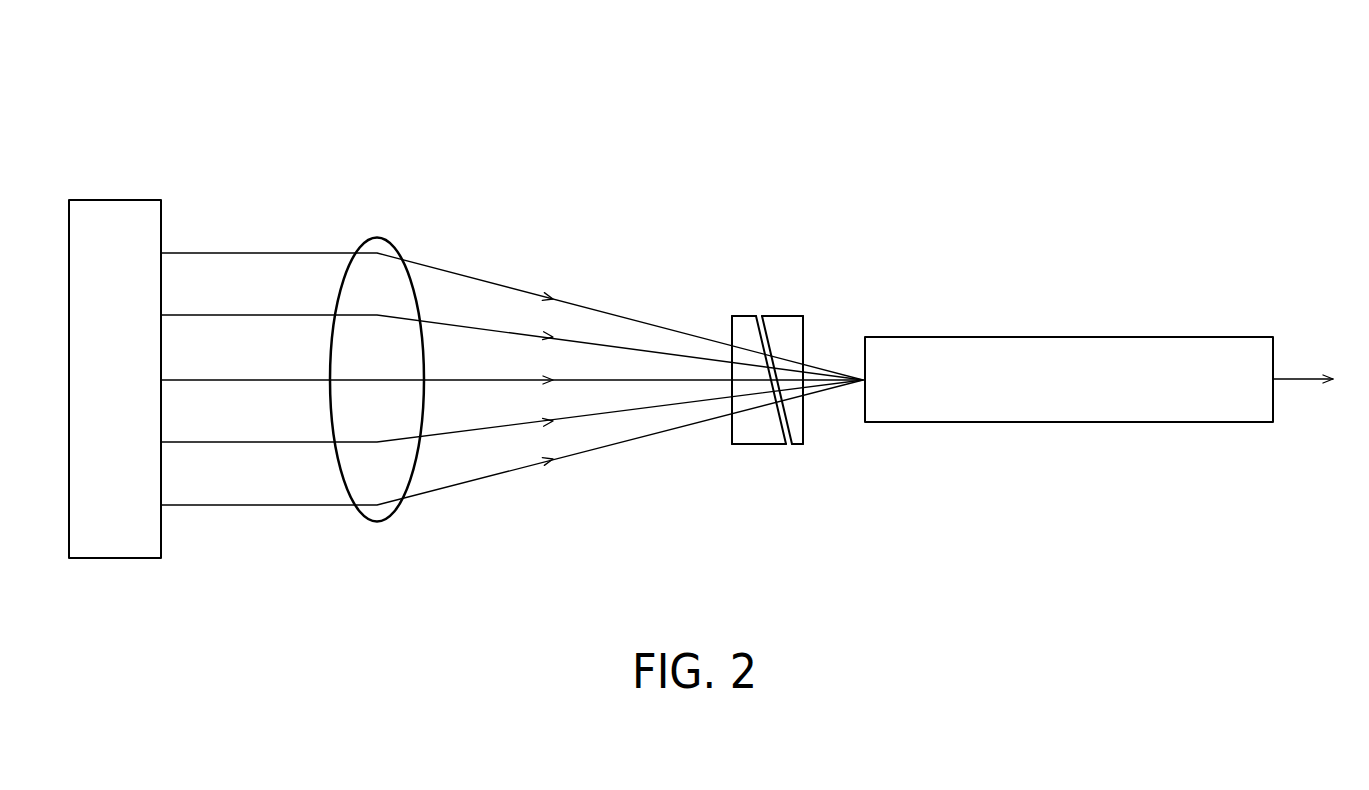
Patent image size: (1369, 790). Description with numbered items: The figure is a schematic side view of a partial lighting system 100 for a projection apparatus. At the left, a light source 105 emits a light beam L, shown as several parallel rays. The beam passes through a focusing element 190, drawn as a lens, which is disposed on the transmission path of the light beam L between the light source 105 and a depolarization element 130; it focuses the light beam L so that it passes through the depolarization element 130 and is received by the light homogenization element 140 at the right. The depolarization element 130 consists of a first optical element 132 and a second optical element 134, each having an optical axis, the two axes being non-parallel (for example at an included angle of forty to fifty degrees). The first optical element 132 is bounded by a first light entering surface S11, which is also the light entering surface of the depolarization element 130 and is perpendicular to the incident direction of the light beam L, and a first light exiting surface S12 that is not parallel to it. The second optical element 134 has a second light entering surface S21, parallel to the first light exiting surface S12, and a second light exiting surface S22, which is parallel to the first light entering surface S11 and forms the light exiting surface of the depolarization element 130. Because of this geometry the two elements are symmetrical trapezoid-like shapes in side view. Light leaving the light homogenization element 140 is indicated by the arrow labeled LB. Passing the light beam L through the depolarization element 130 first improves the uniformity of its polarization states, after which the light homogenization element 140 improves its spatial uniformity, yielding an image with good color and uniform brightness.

The lighting system 100 is at (211, 119).
The light source 105 is at (113, 198).
The light beam L is at (200, 507).
The focusing element 190 is at (375, 236).
The depolarization element 130 is at (813, 266).
The first optical element 132 is at (745, 318).
The second optical element 134 is at (788, 318).
The first light entering surface S11 is at (731, 428).
The first light exiting surface S12 is at (787, 412).
The second light entering surface S21 is at (783, 429).
The second light exiting surface S22 is at (815, 426).
The light homogenization element 140 is at (1076, 337).
The output light beam LB is at (1298, 382).